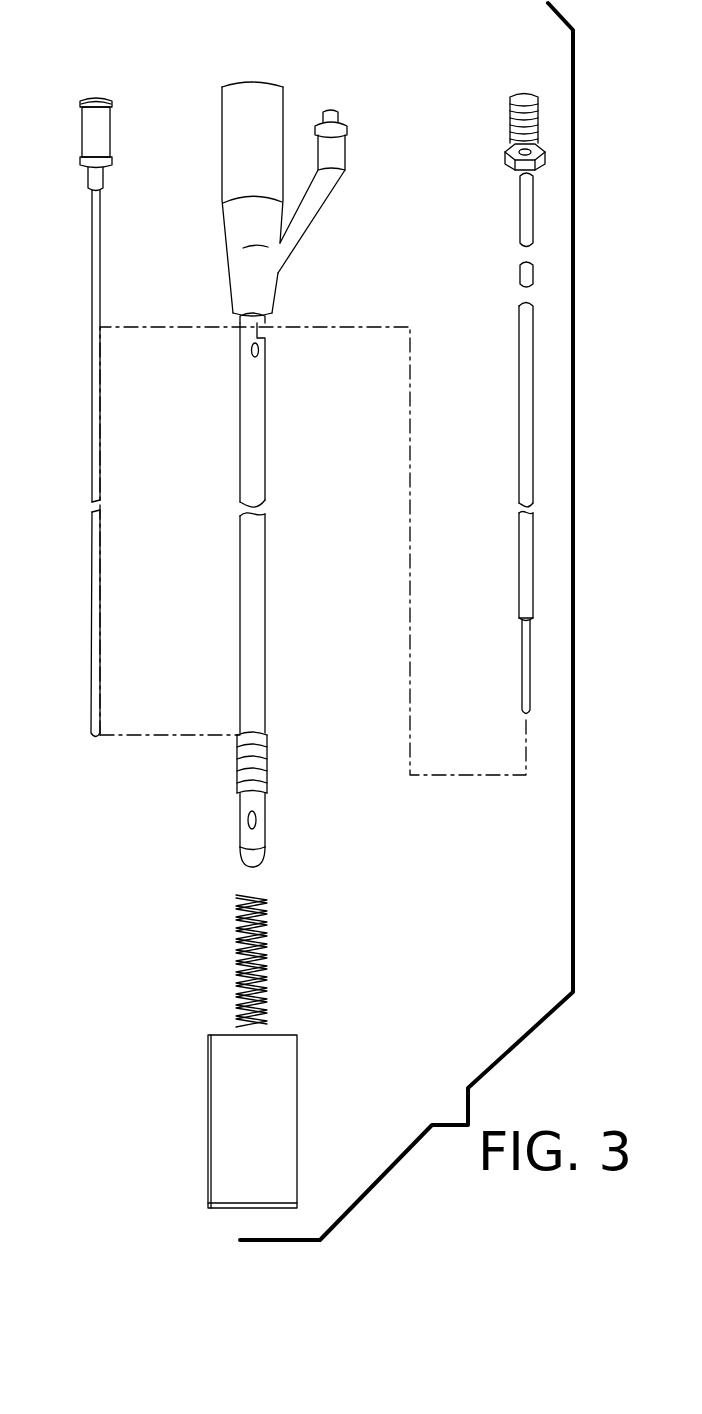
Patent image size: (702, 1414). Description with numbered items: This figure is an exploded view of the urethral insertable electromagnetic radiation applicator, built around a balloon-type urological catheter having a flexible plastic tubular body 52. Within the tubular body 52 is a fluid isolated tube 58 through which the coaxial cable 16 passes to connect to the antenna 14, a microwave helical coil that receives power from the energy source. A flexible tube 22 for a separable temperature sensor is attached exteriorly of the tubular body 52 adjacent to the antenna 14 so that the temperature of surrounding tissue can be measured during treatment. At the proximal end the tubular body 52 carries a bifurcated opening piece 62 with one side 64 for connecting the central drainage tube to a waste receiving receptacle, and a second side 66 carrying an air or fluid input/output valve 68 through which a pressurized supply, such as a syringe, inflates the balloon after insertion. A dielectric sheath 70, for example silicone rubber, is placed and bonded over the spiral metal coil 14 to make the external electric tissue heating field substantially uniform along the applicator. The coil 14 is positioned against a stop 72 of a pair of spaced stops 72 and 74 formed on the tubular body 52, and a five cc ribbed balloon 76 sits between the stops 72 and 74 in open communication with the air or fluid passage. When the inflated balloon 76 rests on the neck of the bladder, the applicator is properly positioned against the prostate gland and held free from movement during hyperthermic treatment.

The antenna 14 is at (237, 962).
The coaxial cable 16 is at (528, 325).
The flexible tube 22 is at (98, 603).
The tubular body 52 is at (252, 623).
The fluid isolated tube 58 is at (252, 355).
The bifurcated opening piece 62 is at (312, 94).
The one side of bifurcated opening piece 64 is at (257, 93).
The second side of bifurcated opening piece 66 is at (325, 173).
The air or fluid input/output valve 68 is at (337, 110).
The dielectric sheath 70 is at (247, 1103).
The stop 72 is at (265, 742).
The stop 74 is at (258, 788).
The ribbed balloon 76 is at (237, 766).